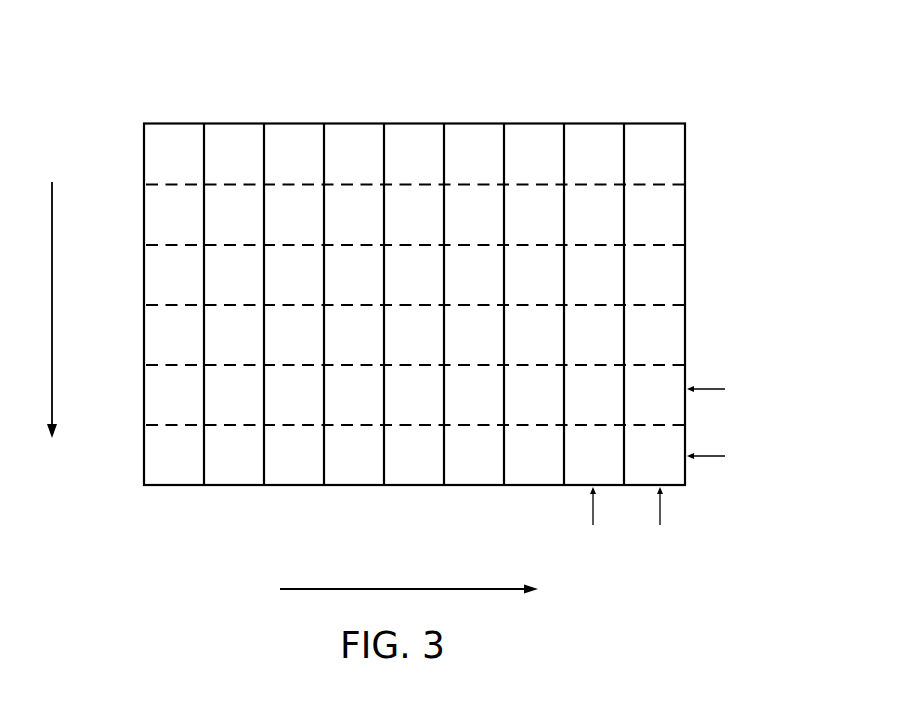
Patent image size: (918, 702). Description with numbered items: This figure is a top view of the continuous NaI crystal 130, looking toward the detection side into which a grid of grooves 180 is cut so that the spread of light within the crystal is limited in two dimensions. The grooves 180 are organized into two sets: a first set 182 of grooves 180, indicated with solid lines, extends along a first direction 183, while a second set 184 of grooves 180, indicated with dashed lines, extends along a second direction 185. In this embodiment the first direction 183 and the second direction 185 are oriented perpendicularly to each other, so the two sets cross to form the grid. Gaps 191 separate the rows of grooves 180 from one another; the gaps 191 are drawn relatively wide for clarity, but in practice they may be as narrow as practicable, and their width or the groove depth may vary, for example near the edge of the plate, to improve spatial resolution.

The grooves 180 is at (680, 56).
The continuous NaI crystal 130 is at (686, 207).
The first set of grooves 182 is at (206, 153).
The first direction 183 is at (54, 293).
The second set of grooves 184 is at (233, 427).
The second direction 185 is at (410, 588).
The gaps 191 is at (674, 467).